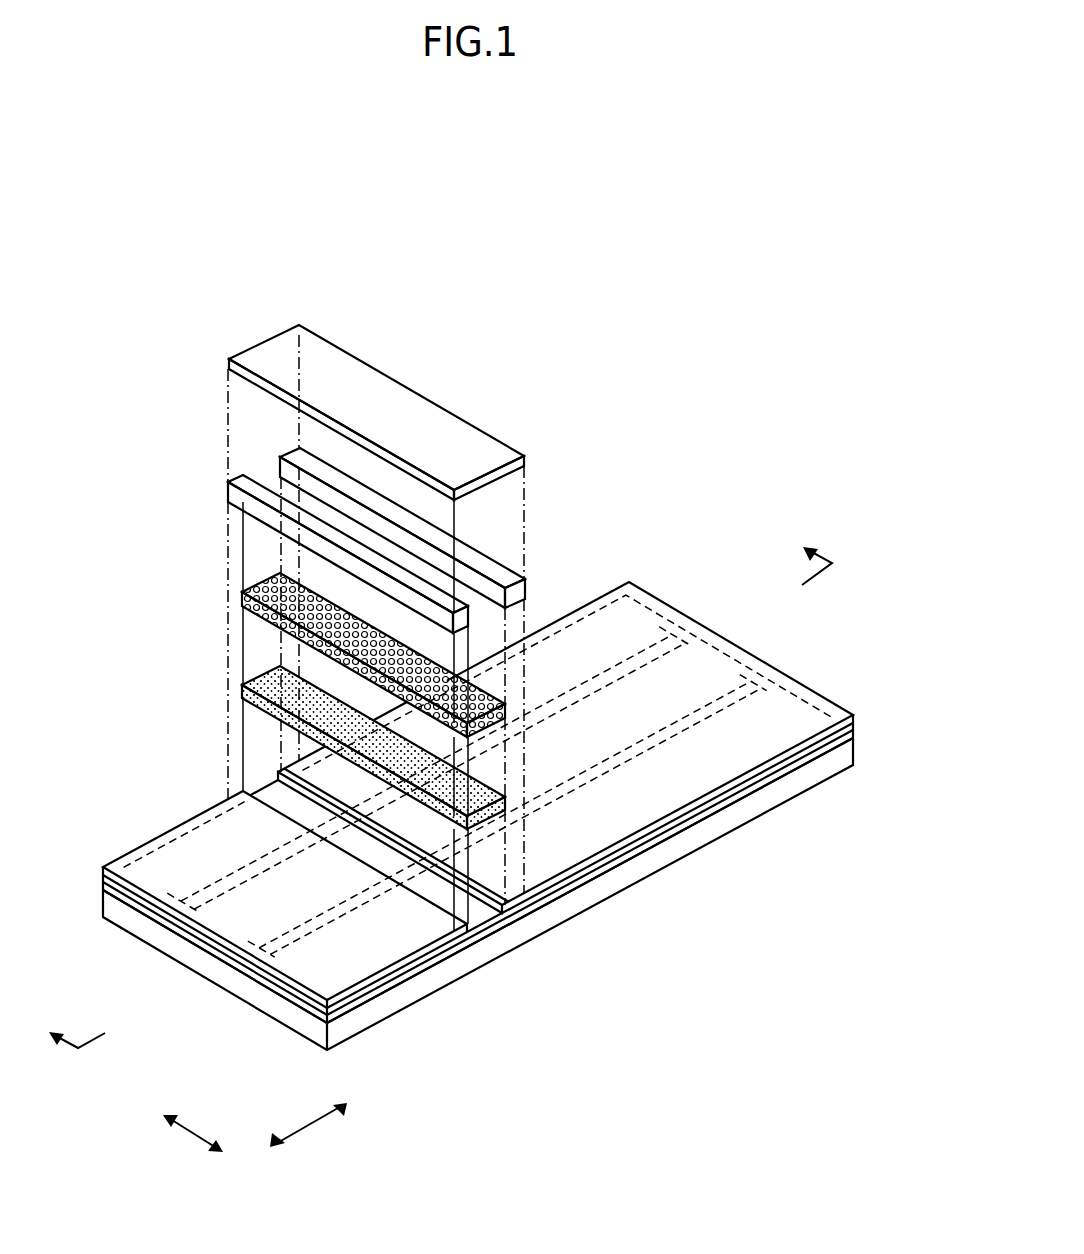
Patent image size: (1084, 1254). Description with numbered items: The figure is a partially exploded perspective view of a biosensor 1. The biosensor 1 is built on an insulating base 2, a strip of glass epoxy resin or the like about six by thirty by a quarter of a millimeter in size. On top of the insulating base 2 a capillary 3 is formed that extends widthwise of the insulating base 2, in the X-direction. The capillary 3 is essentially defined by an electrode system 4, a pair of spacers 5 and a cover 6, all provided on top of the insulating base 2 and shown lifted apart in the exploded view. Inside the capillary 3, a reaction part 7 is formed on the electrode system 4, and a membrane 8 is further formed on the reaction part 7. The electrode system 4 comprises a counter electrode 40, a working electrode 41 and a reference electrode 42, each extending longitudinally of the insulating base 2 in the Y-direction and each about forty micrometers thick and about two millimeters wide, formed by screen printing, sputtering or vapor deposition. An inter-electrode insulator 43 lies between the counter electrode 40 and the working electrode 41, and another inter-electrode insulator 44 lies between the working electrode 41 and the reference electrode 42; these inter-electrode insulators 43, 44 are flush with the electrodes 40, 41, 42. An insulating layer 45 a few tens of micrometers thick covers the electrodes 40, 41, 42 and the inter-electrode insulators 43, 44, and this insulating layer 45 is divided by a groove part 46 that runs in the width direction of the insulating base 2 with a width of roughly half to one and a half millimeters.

The biosensor 1 is at (616, 424).
The insulating base 2 is at (615, 887).
The capillary 3 is at (200, 572).
The electrode system 4 is at (97, 1000).
The spacers 5 is at (230, 500).
The cover 6 is at (380, 388).
The reaction part 7 is at (260, 708).
The membrane 8 is at (258, 617).
The counter electrode 40 is at (255, 992).
The working electrode 41 is at (205, 942).
The reference electrode 42 is at (140, 908).
The inter-electrode insulator 43 is at (728, 693).
The inter-electrode insulator 44 is at (660, 640).
The insulating layer 45 is at (640, 612).
The groove part 46 is at (492, 915).